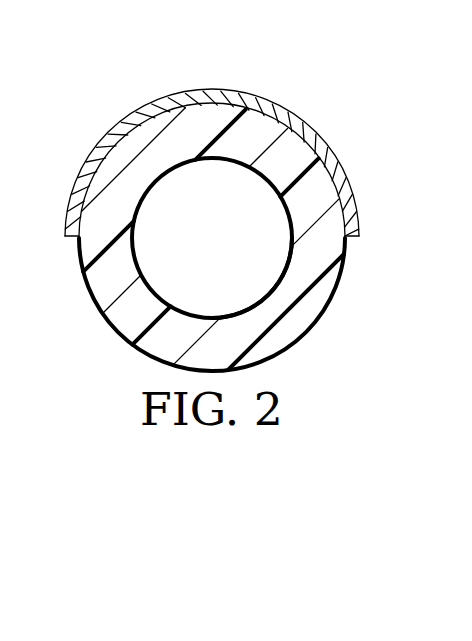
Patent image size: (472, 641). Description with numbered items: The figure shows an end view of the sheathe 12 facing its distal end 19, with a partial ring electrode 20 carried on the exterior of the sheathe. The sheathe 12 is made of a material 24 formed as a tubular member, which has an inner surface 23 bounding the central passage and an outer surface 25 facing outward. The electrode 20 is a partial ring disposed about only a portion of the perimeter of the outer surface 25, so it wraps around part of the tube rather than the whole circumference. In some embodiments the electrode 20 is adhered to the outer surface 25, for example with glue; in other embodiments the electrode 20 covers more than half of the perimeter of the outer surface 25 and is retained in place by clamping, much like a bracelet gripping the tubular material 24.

The sheathe 12 is at (100, 70).
The distal end 19 is at (215, 255).
The electrode 20 is at (243, 95).
The inner surface 23 is at (256, 303).
The material 24 is at (99, 287).
The outer surface 25 is at (322, 308).